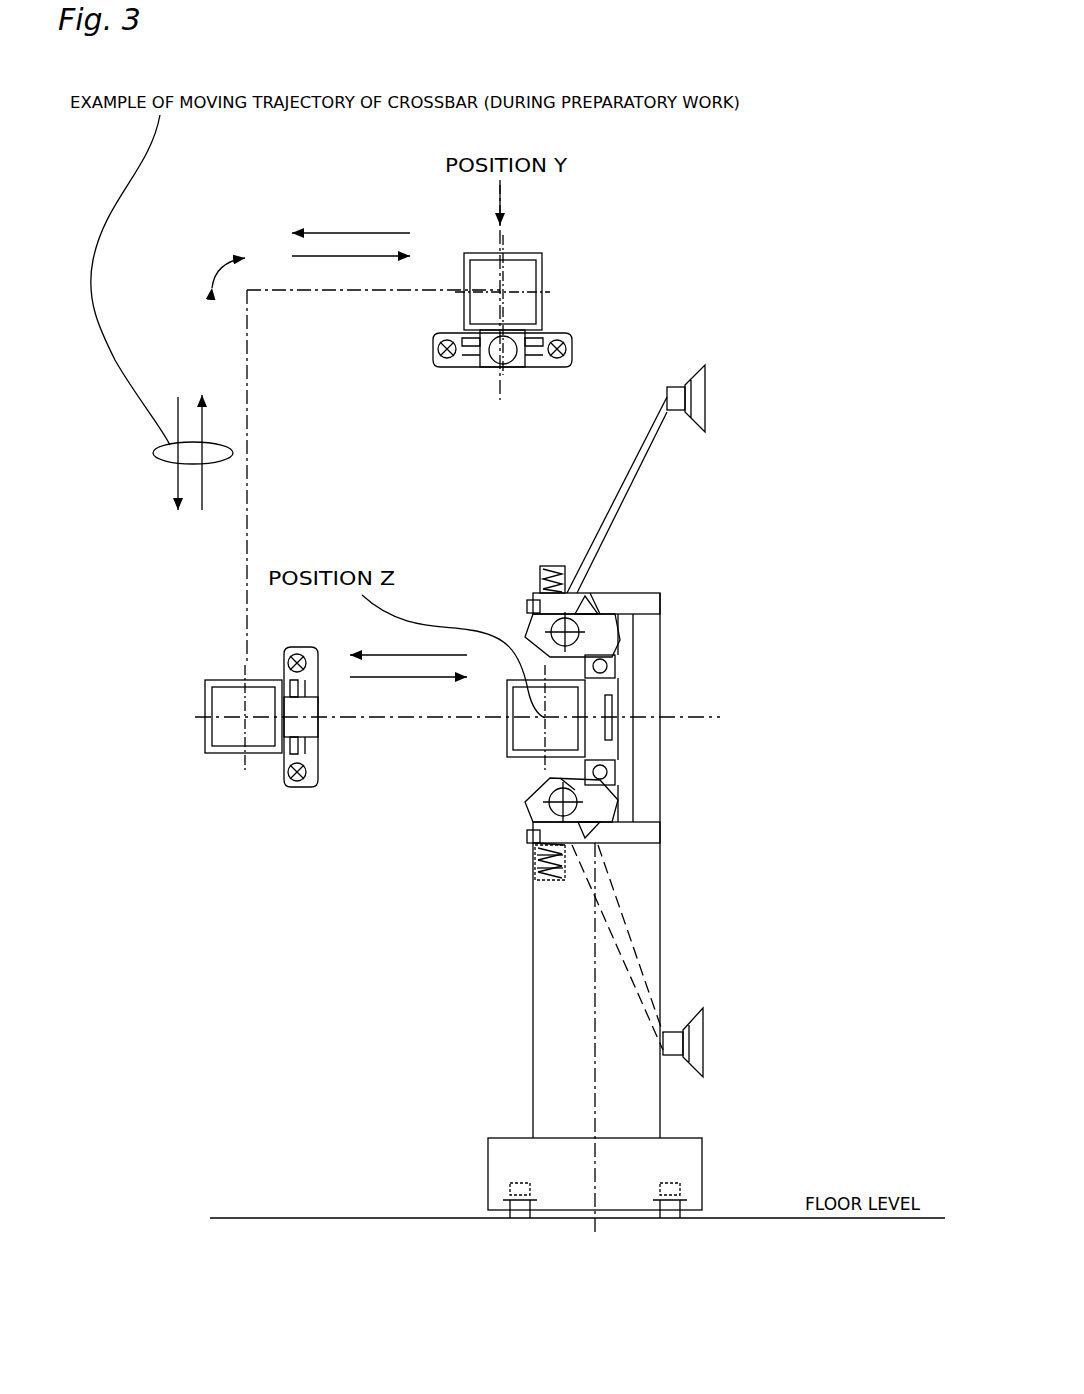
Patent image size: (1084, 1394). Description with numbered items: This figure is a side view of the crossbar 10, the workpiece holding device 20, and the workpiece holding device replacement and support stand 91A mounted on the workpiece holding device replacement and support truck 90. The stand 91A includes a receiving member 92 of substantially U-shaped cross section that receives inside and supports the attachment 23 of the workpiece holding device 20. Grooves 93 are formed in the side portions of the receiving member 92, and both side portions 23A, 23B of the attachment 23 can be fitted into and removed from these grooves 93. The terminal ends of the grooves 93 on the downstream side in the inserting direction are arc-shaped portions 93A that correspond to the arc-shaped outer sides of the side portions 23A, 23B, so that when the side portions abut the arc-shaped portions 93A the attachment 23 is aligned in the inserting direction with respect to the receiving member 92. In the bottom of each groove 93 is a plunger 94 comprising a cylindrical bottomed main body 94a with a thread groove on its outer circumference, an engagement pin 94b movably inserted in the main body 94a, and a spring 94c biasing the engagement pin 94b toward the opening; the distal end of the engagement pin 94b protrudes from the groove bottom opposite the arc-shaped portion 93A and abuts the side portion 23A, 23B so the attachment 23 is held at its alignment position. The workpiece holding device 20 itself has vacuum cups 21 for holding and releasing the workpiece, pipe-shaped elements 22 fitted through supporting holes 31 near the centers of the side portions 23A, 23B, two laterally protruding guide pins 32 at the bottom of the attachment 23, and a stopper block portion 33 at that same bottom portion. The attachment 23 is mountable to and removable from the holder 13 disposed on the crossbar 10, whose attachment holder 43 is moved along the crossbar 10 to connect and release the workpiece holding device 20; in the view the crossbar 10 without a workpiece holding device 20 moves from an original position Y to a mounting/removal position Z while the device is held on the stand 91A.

The crossbar 10 is at (545, 268).
The holder 13 is at (490, 405).
The attachment holder 43 is at (458, 373).
The workpiece holding device 20 is at (672, 721).
The vacuum cup 21 is at (688, 460).
The pipe-shaped element 22 is at (615, 598).
The attachment 23 is at (605, 768).
The side portion of attachment 23A is at (600, 618).
The side portion of attachment 23B is at (600, 845).
The supporting hole 31 is at (540, 625).
The guide pin 32 is at (590, 633).
The stopper block portion 33 is at (620, 735).
The workpiece holding device replacement and support truck 90 is at (566, 912).
The workpiece holding device replacement and support stand 91A is at (510, 1078).
The receiving member 92 is at (662, 678).
The groove 93 is at (528, 605).
The arc-shaped portion 93A is at (598, 596).
The plunger 94 is at (511, 766).
The main body 94a is at (533, 872).
The engagement pin 94b is at (532, 822).
The spring 94c is at (535, 855).